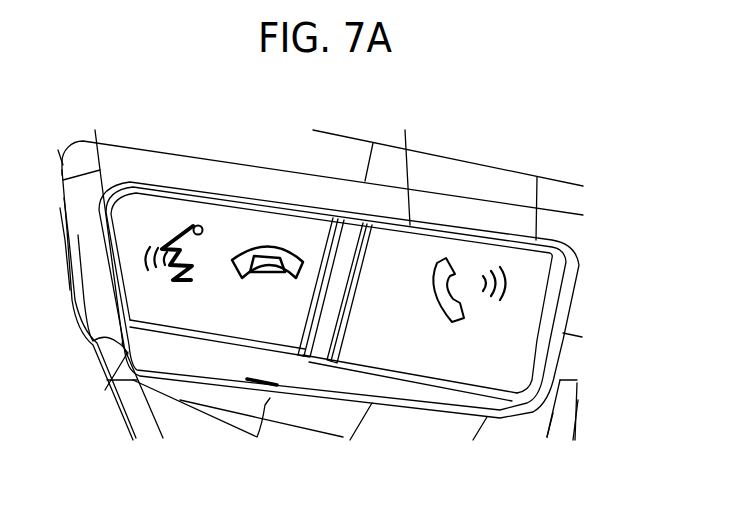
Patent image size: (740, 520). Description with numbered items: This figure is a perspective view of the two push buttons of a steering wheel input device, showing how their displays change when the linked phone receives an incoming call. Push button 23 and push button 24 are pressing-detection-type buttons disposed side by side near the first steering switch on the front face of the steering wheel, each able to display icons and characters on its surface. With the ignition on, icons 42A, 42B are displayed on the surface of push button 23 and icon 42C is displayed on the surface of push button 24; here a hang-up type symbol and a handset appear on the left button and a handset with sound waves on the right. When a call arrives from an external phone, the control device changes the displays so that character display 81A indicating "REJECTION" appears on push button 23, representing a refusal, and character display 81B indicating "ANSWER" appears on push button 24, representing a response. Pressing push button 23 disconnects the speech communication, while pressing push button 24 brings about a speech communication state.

The push button 23 is at (103, 398).
The push button 24 is at (513, 360).
The icon 42A is at (170, 218).
The icon 42B is at (272, 237).
The icon 42C is at (453, 263).
The character display 81A is at (220, 322).
The character display 81B is at (427, 360).